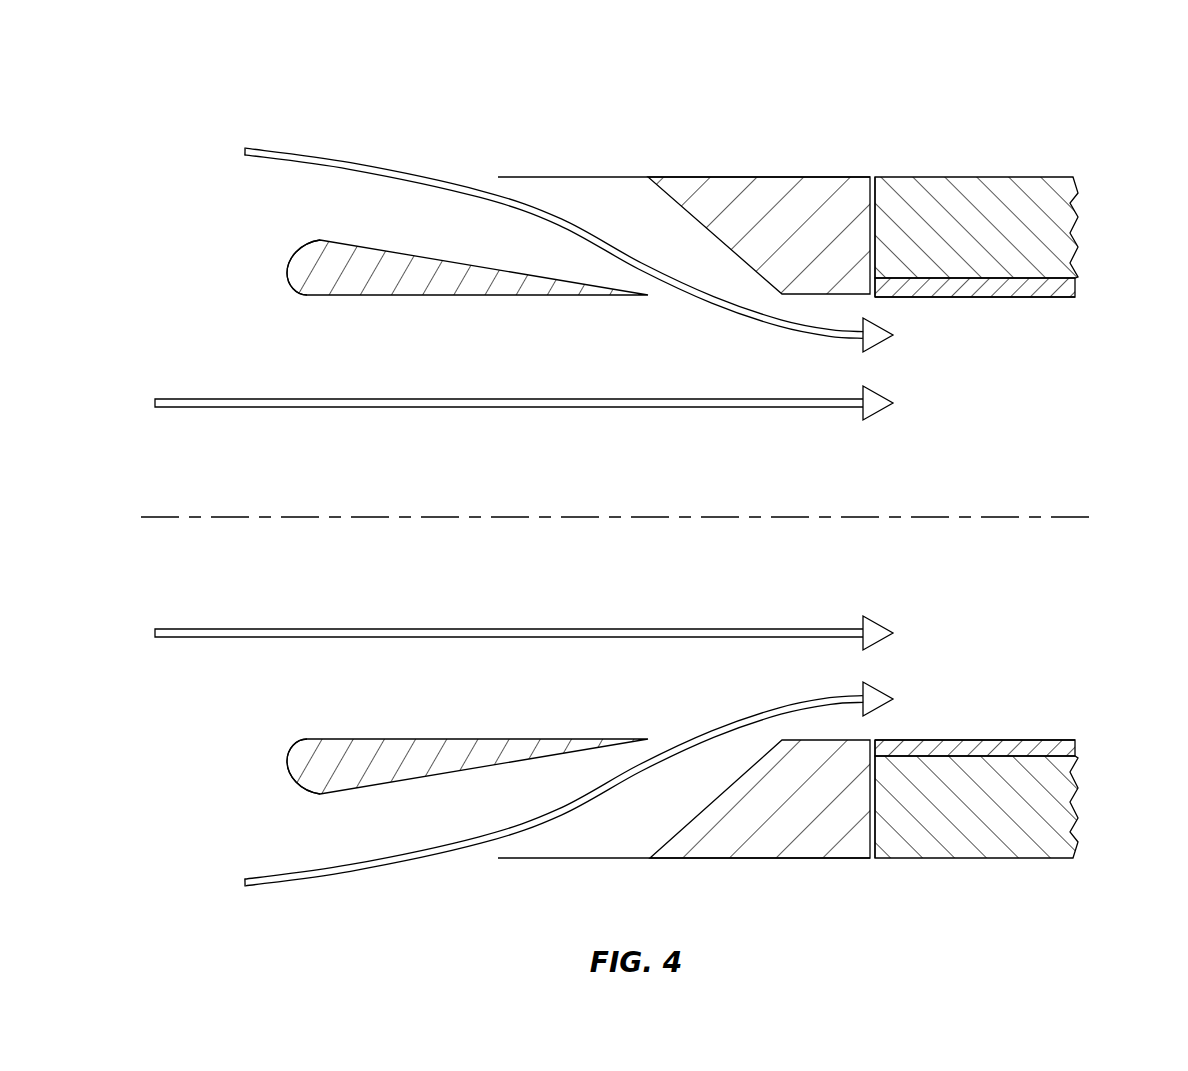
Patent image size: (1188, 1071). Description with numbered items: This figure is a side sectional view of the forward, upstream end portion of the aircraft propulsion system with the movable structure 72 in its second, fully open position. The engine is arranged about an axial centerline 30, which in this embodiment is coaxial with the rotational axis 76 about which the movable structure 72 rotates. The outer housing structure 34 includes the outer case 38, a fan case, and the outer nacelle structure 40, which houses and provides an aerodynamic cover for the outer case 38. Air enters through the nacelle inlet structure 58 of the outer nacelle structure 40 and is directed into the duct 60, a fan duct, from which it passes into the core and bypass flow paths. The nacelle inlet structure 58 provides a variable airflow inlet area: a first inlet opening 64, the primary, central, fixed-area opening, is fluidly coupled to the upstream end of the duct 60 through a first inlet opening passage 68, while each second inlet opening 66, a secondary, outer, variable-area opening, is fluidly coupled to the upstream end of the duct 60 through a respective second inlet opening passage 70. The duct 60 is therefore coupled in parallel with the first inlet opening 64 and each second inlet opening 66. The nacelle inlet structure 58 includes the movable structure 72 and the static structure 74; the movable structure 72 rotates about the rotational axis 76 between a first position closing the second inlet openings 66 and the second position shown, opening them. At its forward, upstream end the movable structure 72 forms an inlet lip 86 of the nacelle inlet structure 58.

The axial centerline 30 is at (632, 569).
The rotational axis 76 is at (1075, 520).
The outer housing structure 34 is at (914, 131).
The outer case 38 is at (1078, 281).
The outer nacelle structure 40 is at (1039, 167).
The nacelle inlet structure 58 is at (630, 138).
The duct 60 is at (1038, 300).
The first inlet opening 64 is at (285, 338).
The second inlet opening 66 is at (362, 215).
The first inlet opening passage 68 is at (475, 474).
The second inlet opening passage 70 is at (613, 223).
The movable structure 72 is at (413, 517).
The static structure 74 is at (741, 168).
The inlet lip 86 is at (278, 267).